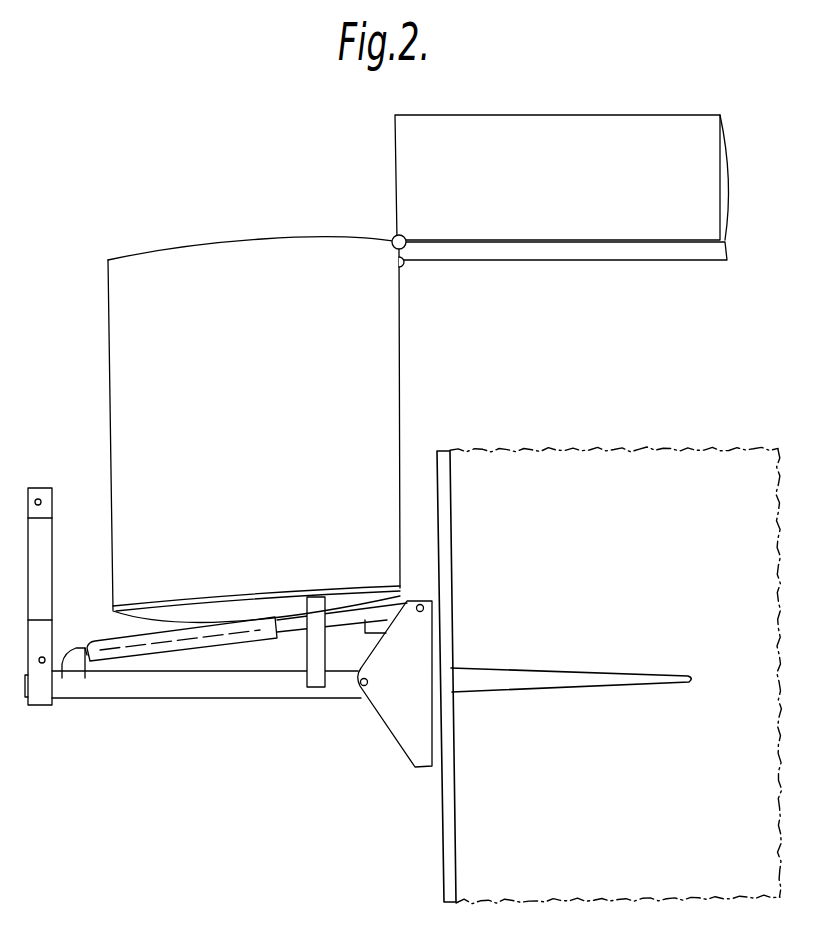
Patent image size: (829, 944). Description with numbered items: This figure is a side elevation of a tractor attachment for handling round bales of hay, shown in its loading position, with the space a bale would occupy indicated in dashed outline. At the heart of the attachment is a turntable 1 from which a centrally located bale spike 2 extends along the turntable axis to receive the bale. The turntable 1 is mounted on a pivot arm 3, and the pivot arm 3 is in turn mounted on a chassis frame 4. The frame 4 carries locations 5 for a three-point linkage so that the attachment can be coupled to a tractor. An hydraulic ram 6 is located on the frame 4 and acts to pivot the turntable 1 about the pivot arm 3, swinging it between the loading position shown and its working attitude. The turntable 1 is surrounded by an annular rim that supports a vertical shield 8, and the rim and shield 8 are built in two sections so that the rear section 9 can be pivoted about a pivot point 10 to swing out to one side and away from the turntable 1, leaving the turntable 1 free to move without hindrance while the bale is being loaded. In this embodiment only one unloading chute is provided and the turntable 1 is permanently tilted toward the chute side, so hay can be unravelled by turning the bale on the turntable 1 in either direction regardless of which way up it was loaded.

The turntable 1 is at (448, 865).
The bale spike 2 is at (537, 680).
The pivot arm 3 is at (392, 715).
The chassis frame 4 is at (127, 690).
The locations for three-point linkage 5 is at (39, 494).
The hydraulic ram 6 is at (207, 638).
The vertical shield 8 is at (122, 360).
The rear section 9 is at (643, 123).
The pivot point 10 is at (395, 236).